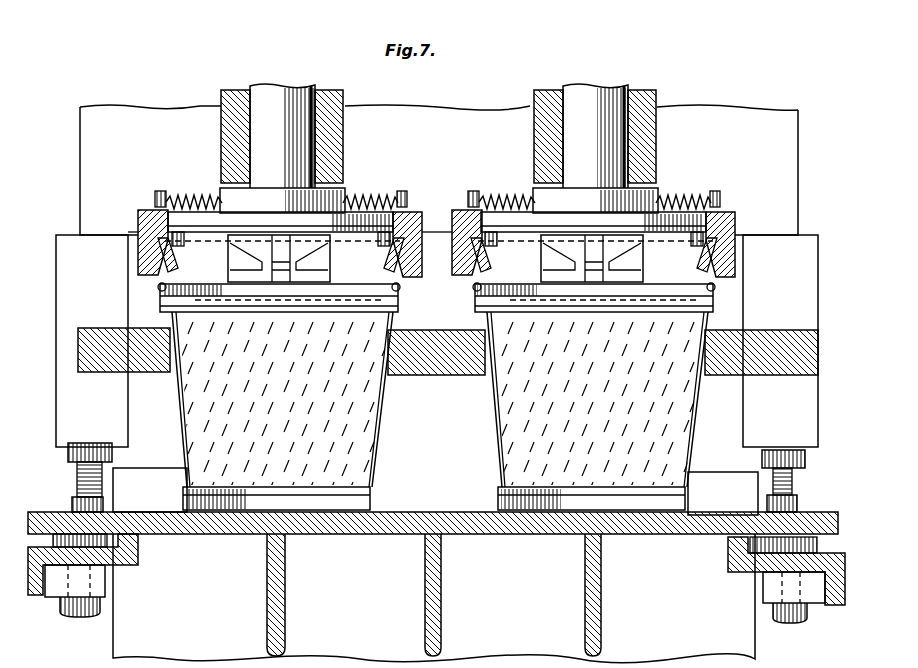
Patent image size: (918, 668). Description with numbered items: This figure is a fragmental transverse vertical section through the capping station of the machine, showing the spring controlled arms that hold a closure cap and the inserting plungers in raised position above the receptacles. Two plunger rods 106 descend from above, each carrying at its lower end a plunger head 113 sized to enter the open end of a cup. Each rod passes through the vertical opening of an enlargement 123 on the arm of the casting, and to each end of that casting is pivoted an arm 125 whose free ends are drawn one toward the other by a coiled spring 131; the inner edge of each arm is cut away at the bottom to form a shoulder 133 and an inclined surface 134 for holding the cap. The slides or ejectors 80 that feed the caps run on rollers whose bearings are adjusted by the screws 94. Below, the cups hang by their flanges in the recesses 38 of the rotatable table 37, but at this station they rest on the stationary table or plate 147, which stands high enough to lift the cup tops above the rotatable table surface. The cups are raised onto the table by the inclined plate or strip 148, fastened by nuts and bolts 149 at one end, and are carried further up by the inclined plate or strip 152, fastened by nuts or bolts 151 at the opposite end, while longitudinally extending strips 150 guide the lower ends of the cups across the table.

The rotatable table 37 is at (772, 348).
The recesses 38 is at (170, 374).
The slides or ejectors 80 is at (323, 247).
The screws 94 is at (105, 472).
The plunger rods 106 is at (281, 100).
The plunger head 113 is at (340, 200).
The enlargement 123 is at (330, 110).
The arms 125 is at (150, 222).
The coiled spring 131 is at (190, 195).
The shoulder 133 is at (180, 240).
The inclined surface 134 is at (166, 258).
The stationary table or plate 147 is at (360, 536).
The inclined plate or strip 148 is at (50, 512).
The nuts and bolts 149 is at (83, 615).
The longitudinally extending strips 150 is at (712, 485).
The nuts or bolts 151 is at (797, 630).
The plate or strip 152 is at (803, 530).